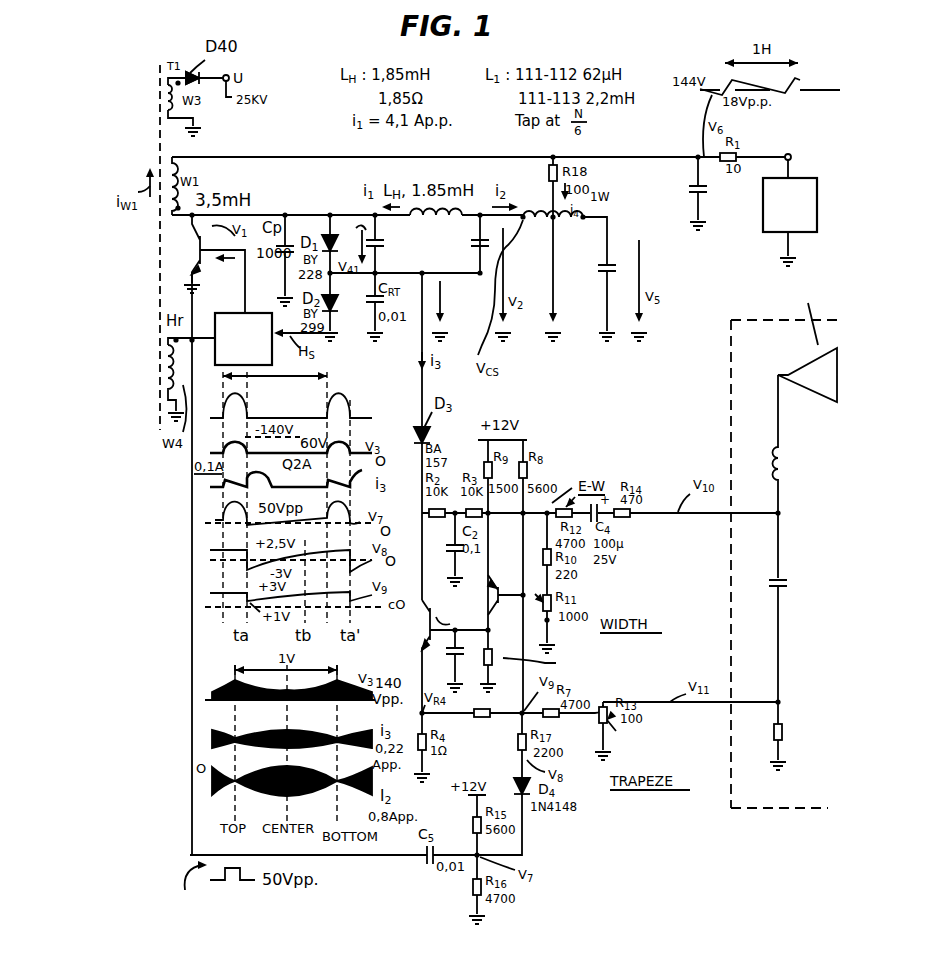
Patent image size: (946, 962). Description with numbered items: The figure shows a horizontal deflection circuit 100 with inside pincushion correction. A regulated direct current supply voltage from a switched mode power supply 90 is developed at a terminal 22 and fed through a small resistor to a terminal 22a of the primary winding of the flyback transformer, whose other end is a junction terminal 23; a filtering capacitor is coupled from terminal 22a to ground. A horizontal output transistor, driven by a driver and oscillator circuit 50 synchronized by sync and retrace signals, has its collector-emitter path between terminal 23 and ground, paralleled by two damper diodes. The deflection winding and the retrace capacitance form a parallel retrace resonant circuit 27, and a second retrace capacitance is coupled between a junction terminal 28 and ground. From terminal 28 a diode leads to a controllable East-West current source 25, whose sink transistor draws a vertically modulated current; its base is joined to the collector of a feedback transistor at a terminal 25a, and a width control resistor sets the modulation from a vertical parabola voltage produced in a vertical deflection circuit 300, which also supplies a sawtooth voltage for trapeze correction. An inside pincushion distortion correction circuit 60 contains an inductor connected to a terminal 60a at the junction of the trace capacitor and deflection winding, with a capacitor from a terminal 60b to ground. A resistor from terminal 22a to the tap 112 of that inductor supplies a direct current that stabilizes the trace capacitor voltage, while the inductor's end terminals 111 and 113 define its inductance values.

The terminal 22 is at (788, 154).
The terminal of primary winding W1 22a is at (700, 160).
The junction terminal 23 is at (194, 222).
The controllable East-West current source 25 is at (448, 596).
The terminal 25a is at (478, 723).
The parallel retrace resonant circuit 27 is at (440, 247).
The junction terminal 28 is at (440, 284).
The driver and oscillator circuit 50 is at (232, 311).
The inside pincushion distortion correction circuit 60 is at (545, 282).
The terminal 60a is at (487, 205).
The terminal 60b is at (593, 224).
The switched mode power supply 90 is at (793, 240).
The deflection circuit 100 is at (376, 382).
The terminal of inductor L1 111 is at (593, 226).
The intermediate terminal, or tap, of inductor L1 112 is at (555, 222).
The terminal of inductor L1 113 is at (520, 224).
The vertical deflection circuit 300 is at (731, 400).